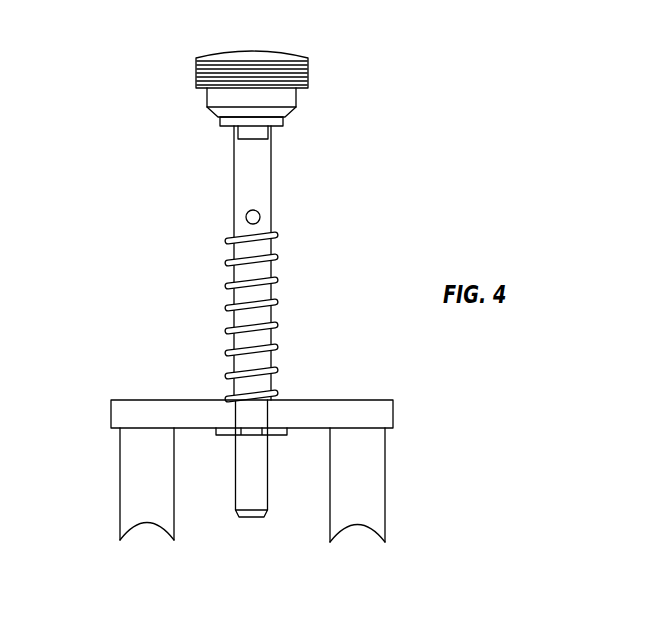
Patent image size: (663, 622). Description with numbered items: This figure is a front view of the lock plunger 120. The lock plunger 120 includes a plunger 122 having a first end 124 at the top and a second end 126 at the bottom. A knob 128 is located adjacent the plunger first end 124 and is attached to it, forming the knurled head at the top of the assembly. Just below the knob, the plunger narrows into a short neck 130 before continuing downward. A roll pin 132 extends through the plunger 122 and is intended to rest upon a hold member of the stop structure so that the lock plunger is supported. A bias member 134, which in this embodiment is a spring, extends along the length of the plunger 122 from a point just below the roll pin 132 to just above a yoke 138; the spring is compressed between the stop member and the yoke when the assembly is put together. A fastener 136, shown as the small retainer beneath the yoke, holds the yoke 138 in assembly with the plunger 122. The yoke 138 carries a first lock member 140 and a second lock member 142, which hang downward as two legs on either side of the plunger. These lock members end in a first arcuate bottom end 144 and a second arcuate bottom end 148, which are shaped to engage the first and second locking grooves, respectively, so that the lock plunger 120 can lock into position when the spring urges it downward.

The lock plunger 120 is at (413, 79).
The plunger 122 is at (237, 188).
The first end 124 is at (240, 150).
The second end 126 is at (237, 512).
The knob 128 is at (309, 61).
The neck 130 is at (258, 133).
The roll pin 132 is at (256, 216).
The bias member 134 is at (280, 302).
The fastener 136 is at (283, 432).
The yoke 138 is at (340, 405).
The first lock member 140 is at (377, 462).
The second lock member 142 is at (125, 470).
The first arcuate bottom end 144 is at (355, 527).
The second arcuate bottom end 148 is at (147, 527).